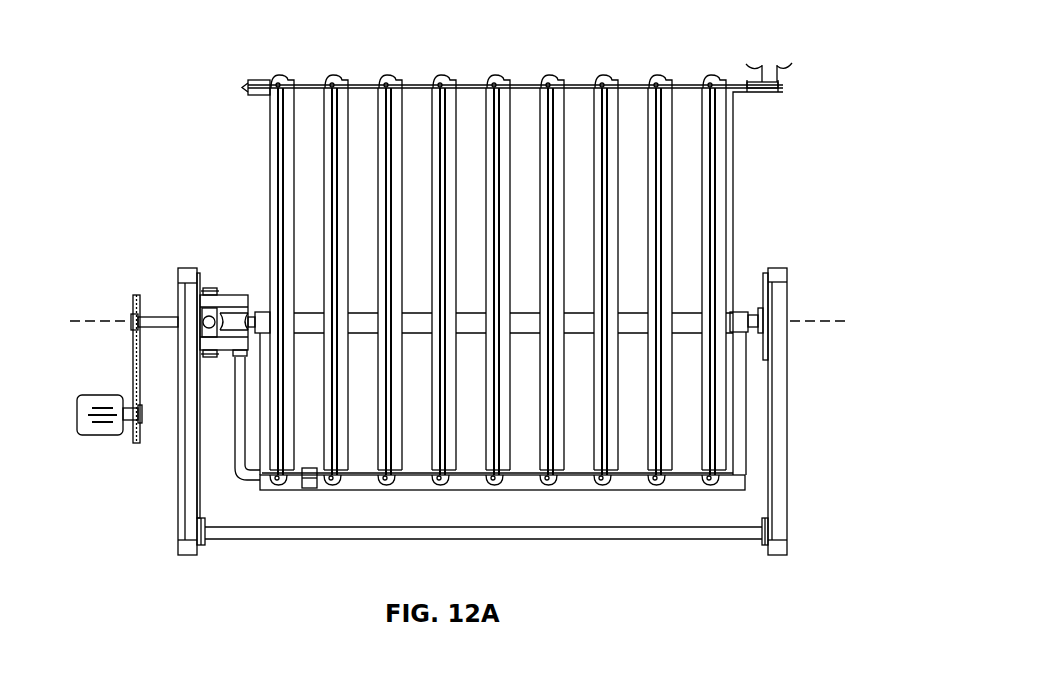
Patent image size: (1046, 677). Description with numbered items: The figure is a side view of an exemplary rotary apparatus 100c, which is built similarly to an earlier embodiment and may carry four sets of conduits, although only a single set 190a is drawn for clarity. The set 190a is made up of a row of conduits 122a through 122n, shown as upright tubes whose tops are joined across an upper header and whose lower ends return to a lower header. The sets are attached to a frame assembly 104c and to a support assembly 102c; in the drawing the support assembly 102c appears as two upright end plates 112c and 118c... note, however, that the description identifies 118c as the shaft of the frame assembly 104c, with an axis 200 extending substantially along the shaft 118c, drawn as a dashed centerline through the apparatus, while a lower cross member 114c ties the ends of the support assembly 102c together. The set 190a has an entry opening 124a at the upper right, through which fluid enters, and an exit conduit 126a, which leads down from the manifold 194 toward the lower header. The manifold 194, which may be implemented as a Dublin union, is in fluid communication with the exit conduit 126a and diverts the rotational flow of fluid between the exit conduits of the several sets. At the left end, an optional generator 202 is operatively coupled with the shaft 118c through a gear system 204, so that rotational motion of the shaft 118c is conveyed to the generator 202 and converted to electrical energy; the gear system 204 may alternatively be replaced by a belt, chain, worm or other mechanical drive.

The rotary apparatus 100c is at (750, 46).
The support assembly 102c is at (792, 500).
The frame assembly 104c is at (743, 298).
The side plate 112c is at (788, 423).
The cross rail 114c is at (678, 541).
The shaft 118c is at (167, 313).
The conduit 122a is at (334, 70).
The conduit 122n is at (712, 68).
The entry opening 124a is at (784, 71).
The exit conduit 126a is at (227, 438).
The set of conduits 190a is at (745, 213).
The manifold 194 is at (234, 287).
The axis 200 is at (107, 321).
The generator 202 is at (88, 446).
The gear system 204 is at (126, 350).